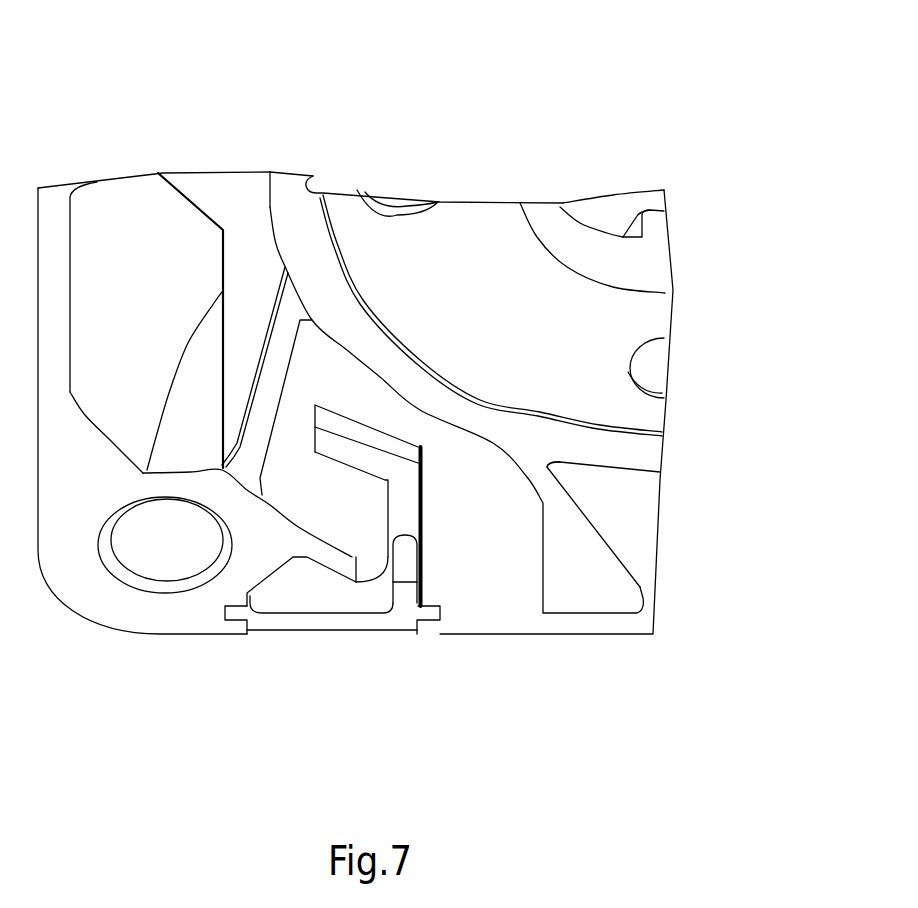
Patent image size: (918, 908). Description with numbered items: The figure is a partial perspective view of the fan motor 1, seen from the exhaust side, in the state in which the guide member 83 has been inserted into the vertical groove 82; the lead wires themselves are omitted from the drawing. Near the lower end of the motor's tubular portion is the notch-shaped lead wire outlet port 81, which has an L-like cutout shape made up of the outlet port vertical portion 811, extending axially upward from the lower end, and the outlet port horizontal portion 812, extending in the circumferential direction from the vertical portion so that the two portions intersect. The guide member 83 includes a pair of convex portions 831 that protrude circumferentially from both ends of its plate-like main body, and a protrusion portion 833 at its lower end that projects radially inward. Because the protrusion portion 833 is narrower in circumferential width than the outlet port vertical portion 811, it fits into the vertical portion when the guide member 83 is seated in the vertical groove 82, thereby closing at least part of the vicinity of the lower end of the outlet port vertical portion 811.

The fan motor 1 is at (145, 120).
The lead wire outlet port 81 is at (772, 490).
The outlet port vertical portion 811 is at (392, 503).
The outlet port horizontal portion 812 is at (370, 467).
The vertical groove 82 is at (303, 586).
The guide member 83 is at (283, 625).
The convex portions 831 is at (233, 627).
The protrusion portion 833 is at (405, 557).